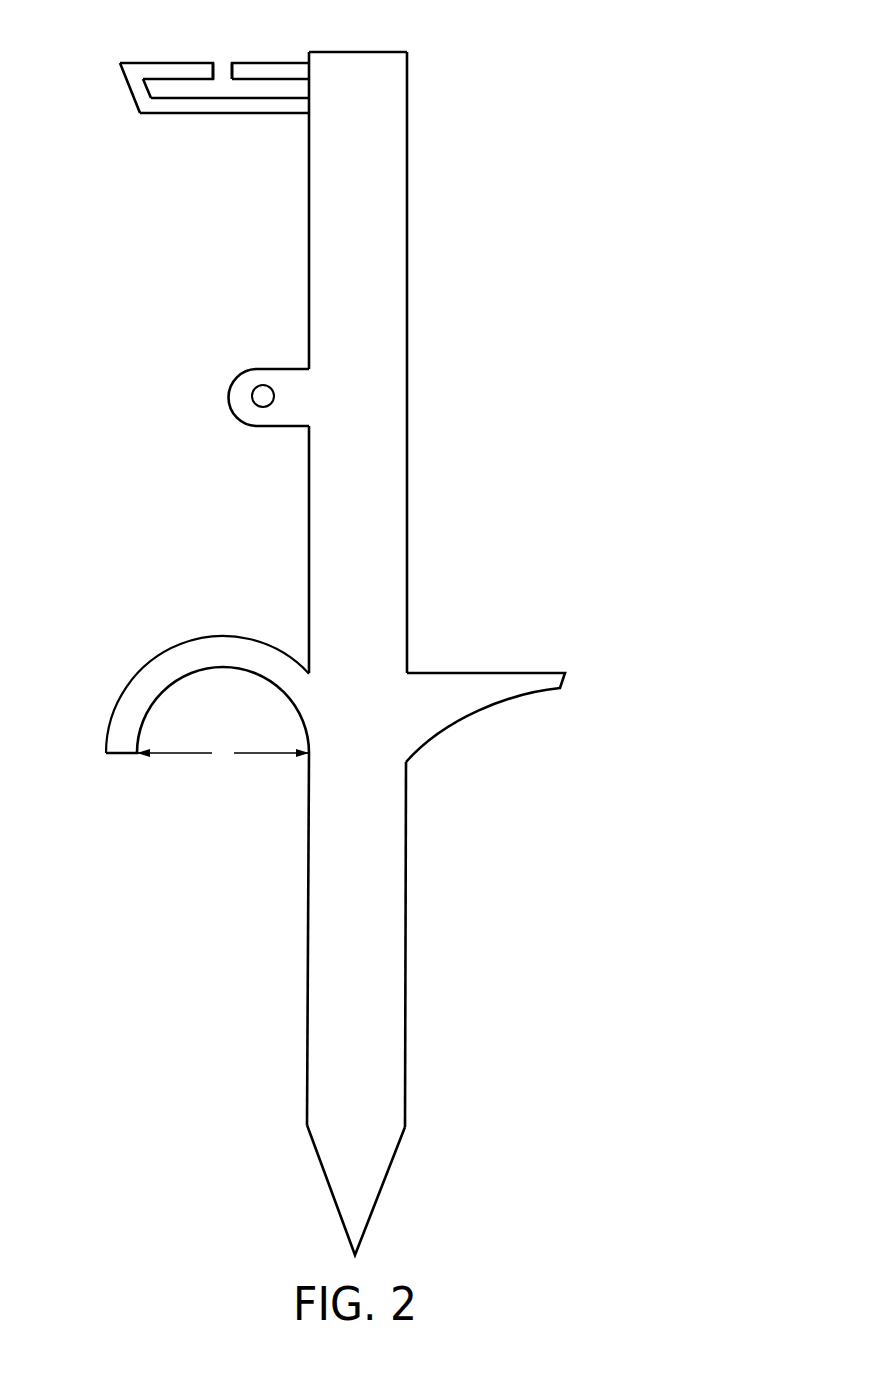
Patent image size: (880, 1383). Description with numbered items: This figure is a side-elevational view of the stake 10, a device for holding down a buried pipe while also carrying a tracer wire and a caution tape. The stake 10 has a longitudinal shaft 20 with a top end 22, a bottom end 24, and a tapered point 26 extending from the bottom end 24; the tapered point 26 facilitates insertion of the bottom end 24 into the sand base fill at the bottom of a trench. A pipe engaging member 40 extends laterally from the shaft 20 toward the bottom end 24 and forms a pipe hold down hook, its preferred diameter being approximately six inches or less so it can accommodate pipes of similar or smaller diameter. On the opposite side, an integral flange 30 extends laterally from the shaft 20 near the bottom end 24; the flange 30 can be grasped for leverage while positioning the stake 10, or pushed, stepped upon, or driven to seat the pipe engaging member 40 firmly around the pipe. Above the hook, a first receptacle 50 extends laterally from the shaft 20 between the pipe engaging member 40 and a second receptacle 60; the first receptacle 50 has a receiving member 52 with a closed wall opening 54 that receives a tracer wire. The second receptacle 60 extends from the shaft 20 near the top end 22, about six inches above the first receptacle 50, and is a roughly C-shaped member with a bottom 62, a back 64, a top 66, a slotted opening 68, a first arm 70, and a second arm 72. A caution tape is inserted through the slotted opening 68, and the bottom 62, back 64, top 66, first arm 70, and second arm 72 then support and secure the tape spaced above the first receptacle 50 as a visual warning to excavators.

The stake 10 is at (505, 377).
The longitudinal shaft 20 is at (393, 236).
The top end 22 is at (391, 62).
The bottom end 24 is at (318, 1038).
The tapered point 26 is at (368, 1186).
The integral flange 30 is at (493, 660).
The pipe engaging member 40 is at (153, 645).
The first receptacle 50 is at (255, 357).
The receiving member 52 is at (297, 413).
The closed wall opening 54 is at (263, 396).
The second receptacle 60 is at (123, 50).
The bottom 62 is at (305, 89).
The back 64 is at (192, 107).
The top 66 is at (137, 80).
The slotted opening 68 is at (221, 52).
The first arm 70 is at (170, 67).
The second arm 72 is at (283, 68).